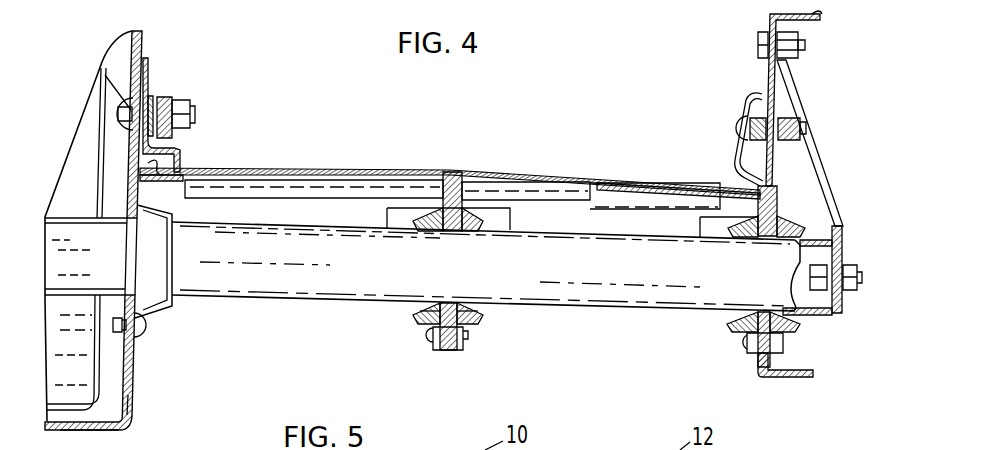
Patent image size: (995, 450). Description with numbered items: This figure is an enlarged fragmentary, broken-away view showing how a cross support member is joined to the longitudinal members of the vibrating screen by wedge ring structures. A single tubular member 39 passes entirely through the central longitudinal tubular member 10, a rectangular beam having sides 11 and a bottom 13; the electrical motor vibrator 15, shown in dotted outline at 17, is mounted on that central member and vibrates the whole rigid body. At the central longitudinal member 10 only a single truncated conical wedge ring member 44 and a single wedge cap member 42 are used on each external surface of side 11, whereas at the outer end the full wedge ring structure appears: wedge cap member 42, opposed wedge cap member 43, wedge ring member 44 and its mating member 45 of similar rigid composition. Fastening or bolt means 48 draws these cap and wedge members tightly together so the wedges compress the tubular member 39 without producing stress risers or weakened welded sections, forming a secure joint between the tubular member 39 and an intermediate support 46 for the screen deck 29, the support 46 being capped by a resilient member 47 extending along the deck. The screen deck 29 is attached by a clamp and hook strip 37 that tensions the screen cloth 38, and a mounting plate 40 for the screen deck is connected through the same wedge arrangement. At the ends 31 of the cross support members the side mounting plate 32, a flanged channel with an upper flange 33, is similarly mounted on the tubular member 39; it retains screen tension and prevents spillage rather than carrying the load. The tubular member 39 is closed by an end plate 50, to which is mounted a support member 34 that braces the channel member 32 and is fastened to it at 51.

The central longitudinal tubular member 10 is at (156, 381).
The sides 11 is at (131, 398).
The bottom 13 is at (112, 432).
The electrical motor vibrator 15 is at (173, 50).
The motor vibrator (dotted outline) 17 is at (81, 352).
The screen deck 29 is at (398, 163).
The ends of cross support members 31 is at (810, 316).
The side mounting plate 32 is at (755, 22).
The upper flange 33 is at (821, 14).
The support member 34 is at (817, 168).
The clamp and hook strip 37 is at (735, 101).
The screen cloth 38 is at (237, 168).
The tubular member 39 is at (633, 320).
The mounting plate for the screen deck 40 is at (452, 361).
The wedge cap member 42 is at (172, 306).
The opposed wedge cap member 43 is at (475, 318).
The truncated conical wedge ring member 44 is at (480, 310).
The mating member 45 is at (415, 316).
The intermediate support 46 is at (462, 187).
The resilient member 47 is at (451, 175).
The bolt means 48 is at (465, 340).
The end plate 50 is at (823, 313).
The fastening 51 is at (790, 48).